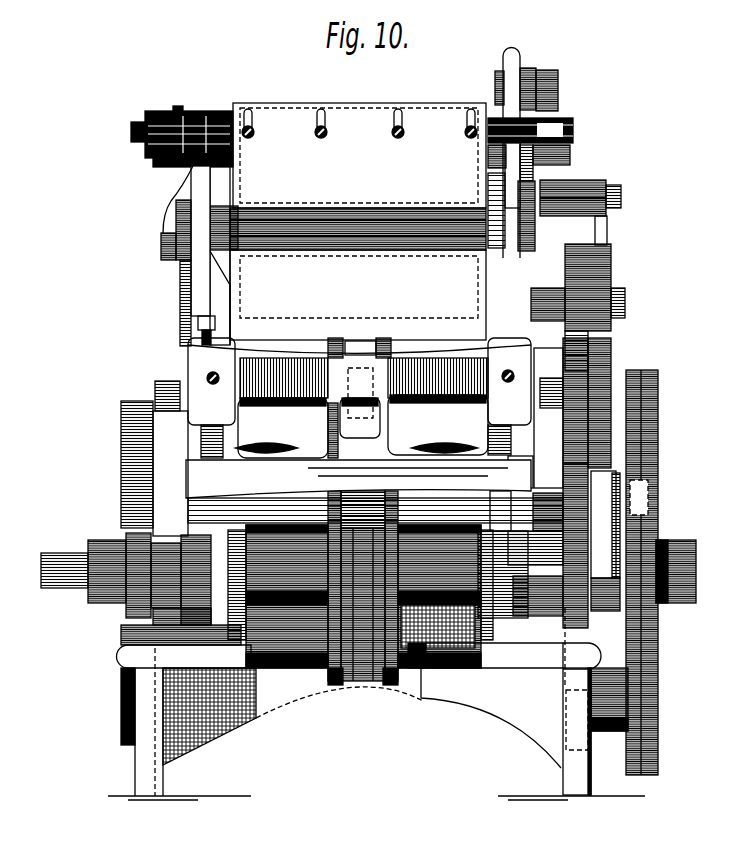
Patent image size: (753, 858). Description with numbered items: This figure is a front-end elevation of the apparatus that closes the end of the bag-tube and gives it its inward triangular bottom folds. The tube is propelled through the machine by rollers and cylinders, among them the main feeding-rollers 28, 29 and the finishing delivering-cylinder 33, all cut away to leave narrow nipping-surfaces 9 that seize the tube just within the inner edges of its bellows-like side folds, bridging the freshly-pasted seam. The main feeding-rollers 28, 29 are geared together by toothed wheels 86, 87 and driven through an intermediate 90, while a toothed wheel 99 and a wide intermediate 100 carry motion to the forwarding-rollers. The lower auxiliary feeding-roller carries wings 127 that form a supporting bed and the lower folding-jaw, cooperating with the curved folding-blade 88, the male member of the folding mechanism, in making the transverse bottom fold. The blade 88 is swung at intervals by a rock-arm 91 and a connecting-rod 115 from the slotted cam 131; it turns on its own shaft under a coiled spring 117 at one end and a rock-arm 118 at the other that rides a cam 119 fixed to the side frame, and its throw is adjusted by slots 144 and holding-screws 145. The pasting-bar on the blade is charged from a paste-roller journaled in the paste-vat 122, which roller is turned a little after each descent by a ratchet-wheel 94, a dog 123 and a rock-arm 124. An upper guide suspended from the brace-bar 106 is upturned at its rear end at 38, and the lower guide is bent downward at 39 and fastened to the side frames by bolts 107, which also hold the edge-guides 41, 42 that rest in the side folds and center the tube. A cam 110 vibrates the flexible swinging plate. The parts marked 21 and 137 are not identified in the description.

The narrow nipping-surfaces 9 is at (320, 343).
The frame plate 21 is at (137, 464).
The main feeding-roller 28 is at (360, 349).
The main feeding-roller 29 is at (375, 509).
The finishing delivering-cylinder 33 is at (363, 606).
The upturned rear end of upper guide 38 is at (360, 403).
The downward-bent rear end of lower guide 39 is at (358, 479).
The edge-guide 41 is at (438, 425).
The edge-guide 42 is at (286, 428).
The toothed wheel 86 is at (557, 420).
The toothed wheel 87 is at (557, 468).
The folding-blade 88 is at (359, 155).
The intermediate 90 is at (582, 640).
The rock-arm 91 is at (550, 165).
The ratchet-wheel 94 is at (527, 235).
The toothed wheel 99 is at (604, 350).
The wide intermediate 100 is at (603, 258).
The brace-bar 106 is at (359, 381).
The screw-bolts 107 is at (216, 427).
The cam 110 is at (96, 575).
The connecting-rod 115 is at (599, 219).
The spring 117 is at (530, 130).
The rock-arm 118 is at (166, 190).
The cam 119 is at (175, 277).
The paste-vat 122 is at (358, 295).
The dog 123 is at (514, 146).
The rock-arm 124 is at (512, 50).
The wings 127 is at (278, 596).
The slotted cam 131 is at (661, 572).
The drum 137 is at (445, 596).
The slots 144 is at (395, 112).
The holding-screws 145 is at (396, 127).